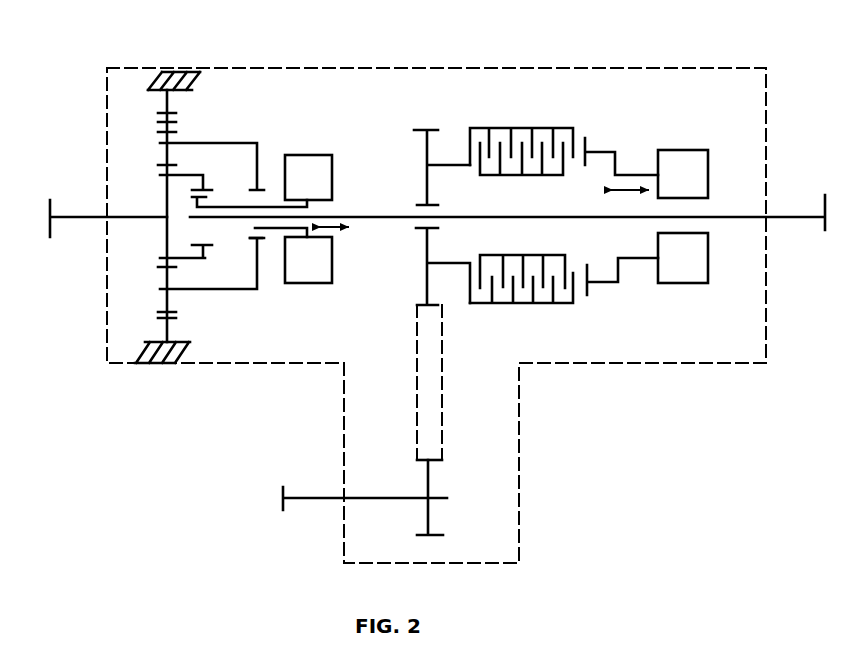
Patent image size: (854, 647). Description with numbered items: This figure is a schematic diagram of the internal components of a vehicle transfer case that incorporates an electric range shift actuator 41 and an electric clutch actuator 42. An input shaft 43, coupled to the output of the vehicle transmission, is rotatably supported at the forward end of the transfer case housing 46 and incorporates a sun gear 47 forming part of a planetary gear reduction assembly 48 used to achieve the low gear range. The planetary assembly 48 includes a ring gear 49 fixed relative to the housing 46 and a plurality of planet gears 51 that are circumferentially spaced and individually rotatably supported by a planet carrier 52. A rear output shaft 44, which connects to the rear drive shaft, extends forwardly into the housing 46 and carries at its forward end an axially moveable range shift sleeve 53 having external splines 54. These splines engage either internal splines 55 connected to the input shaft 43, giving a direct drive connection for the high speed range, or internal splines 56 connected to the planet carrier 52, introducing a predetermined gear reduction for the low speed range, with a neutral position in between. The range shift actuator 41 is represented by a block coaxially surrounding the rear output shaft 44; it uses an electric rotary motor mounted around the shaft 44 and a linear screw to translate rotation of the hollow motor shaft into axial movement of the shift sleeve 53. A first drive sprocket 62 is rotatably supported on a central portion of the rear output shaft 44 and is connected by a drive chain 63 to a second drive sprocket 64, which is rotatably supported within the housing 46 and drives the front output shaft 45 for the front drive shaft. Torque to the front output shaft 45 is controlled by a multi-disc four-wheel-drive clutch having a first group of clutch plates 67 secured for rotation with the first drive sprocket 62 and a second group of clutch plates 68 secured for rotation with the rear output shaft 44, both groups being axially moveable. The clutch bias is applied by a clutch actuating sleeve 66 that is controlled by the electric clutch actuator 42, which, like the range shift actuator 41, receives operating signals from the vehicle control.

The electric range shift actuator 41 is at (327, 150).
The electric clutch actuator 42 is at (700, 146).
The input shaft 43 is at (85, 220).
The rear output shaft 44 is at (792, 215).
The front output shaft 45 is at (310, 500).
The transfer case housing 46 is at (447, 68).
The sun gear 47 is at (165, 178).
The planetary gear reduction assembly 48 is at (143, 160).
The ring gear 49 is at (165, 108).
The planet gears 51 is at (165, 132).
The planet carrier 52 is at (200, 292).
The range shift sleeve 53 is at (272, 207).
The external splines 54 is at (203, 196).
The internal splines 55 is at (203, 243).
The internal splines 56 is at (252, 243).
The first drive sprocket 62 is at (430, 146).
The drive chain 63 is at (442, 413).
The second drive sprocket 64 is at (430, 513).
The clutch actuating sleeve 66 is at (615, 152).
The first group of clutch plates 67 is at (515, 140).
The second group of clutch plates 68 is at (493, 338).